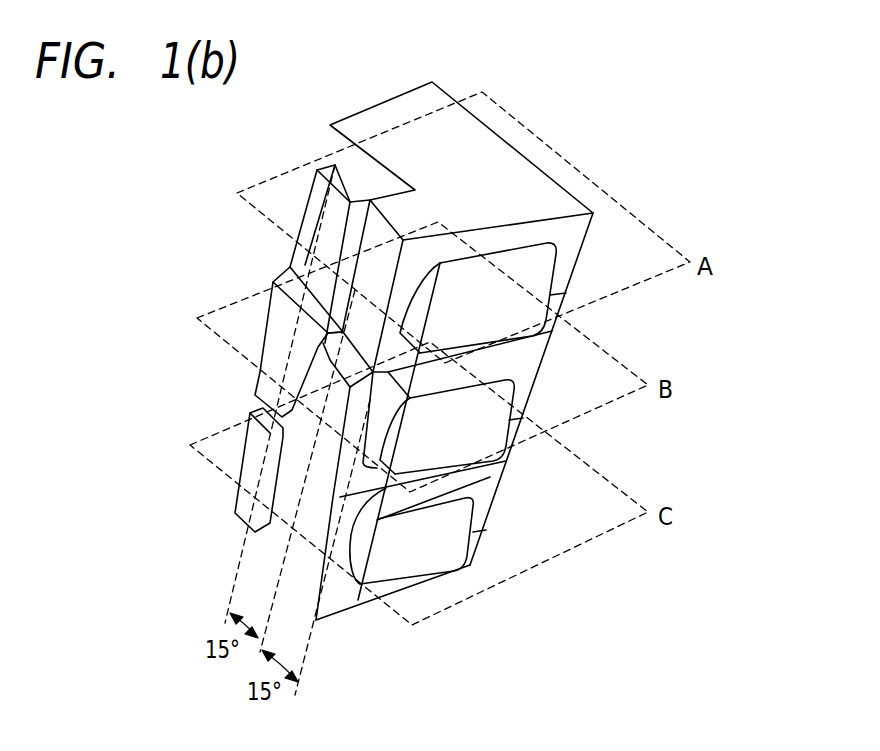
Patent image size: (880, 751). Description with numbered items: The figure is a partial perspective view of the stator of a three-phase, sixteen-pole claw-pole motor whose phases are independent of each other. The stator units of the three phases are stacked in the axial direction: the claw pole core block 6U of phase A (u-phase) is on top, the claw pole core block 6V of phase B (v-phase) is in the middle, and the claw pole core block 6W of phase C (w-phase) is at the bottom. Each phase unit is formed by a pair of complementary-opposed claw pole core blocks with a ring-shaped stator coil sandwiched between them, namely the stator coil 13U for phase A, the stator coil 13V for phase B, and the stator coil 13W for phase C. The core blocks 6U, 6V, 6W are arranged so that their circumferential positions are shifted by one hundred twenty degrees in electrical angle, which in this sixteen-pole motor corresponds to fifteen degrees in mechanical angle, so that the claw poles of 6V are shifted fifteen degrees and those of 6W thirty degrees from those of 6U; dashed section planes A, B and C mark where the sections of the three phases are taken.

The claw pole core block 6U is at (322, 213).
The claw pole core block 6V is at (282, 340).
The claw pole core block 6W is at (290, 478).
The ring-shaped stator coil 13U is at (502, 307).
The ring-shaped stator coil 13V is at (473, 413).
The ring-shaped stator coil 13W is at (422, 538).